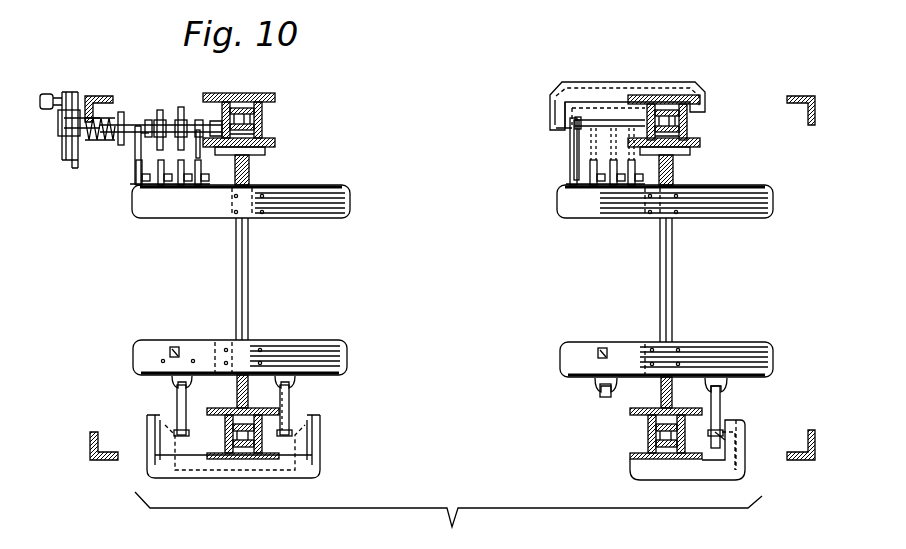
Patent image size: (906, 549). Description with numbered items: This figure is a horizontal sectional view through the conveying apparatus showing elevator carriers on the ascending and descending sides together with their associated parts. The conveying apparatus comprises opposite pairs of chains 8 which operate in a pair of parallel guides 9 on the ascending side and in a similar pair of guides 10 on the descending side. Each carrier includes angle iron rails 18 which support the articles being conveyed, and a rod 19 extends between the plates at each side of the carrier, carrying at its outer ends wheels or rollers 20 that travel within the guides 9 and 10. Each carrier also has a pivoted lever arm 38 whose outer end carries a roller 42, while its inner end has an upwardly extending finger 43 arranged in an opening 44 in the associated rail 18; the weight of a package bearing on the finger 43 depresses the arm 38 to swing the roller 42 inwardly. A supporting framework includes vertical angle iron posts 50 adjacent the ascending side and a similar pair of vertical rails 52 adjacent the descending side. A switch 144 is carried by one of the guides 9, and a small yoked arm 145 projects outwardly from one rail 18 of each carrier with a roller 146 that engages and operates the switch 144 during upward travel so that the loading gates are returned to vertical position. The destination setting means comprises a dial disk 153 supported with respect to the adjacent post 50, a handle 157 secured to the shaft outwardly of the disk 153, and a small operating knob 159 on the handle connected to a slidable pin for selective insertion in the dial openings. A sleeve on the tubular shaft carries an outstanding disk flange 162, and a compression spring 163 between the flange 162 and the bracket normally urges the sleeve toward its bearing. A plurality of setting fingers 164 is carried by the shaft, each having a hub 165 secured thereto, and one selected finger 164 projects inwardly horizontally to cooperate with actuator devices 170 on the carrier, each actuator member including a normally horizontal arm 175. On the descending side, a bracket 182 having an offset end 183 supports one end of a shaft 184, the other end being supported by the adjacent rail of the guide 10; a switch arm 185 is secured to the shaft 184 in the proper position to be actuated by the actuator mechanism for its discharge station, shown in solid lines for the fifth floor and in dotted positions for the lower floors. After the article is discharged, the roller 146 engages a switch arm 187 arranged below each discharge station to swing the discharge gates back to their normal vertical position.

The chains 8 is at (648, 440).
The guides 9 is at (270, 128).
The guides 10 is at (698, 115).
The angle iron rails 18 is at (312, 218).
The rod 19 is at (249, 287).
The wheels or rollers 20 is at (250, 150).
The lever arm 38 is at (172, 384).
The roller 42 is at (177, 400).
The finger 43 is at (174, 347).
The opening 44 is at (182, 356).
The vertical angle iron posts 50 is at (104, 96).
The vertical rails 52 is at (800, 112).
The switch 144 is at (300, 402).
The yoked arm 145 is at (296, 386).
The roller 146 is at (300, 396).
The dial disk 153 is at (74, 168).
The handle 157 is at (66, 120).
The operating knob 159 is at (42, 94).
The disk flange 162 is at (121, 120).
The compression spring 163 is at (100, 140).
The setting fingers 164 is at (185, 115).
The hub 165 is at (160, 112).
The actuator device 170 is at (130, 171).
The horizontal arm 175 is at (200, 158).
The bracket 182 is at (617, 92).
The offset 183 is at (556, 118).
The shaft 184 is at (597, 122).
The switch arm 185 is at (570, 150).
The switch arm 187 is at (728, 392).